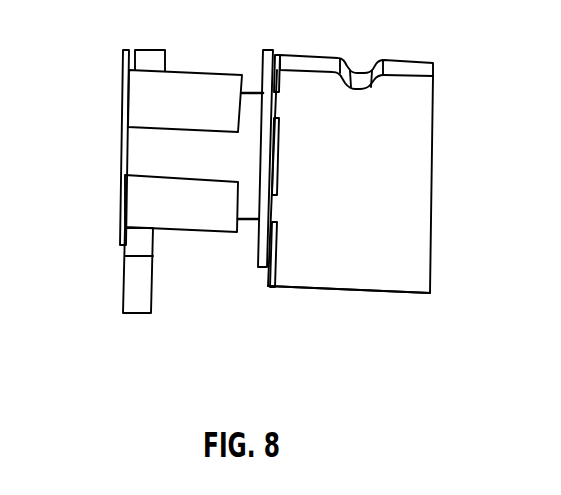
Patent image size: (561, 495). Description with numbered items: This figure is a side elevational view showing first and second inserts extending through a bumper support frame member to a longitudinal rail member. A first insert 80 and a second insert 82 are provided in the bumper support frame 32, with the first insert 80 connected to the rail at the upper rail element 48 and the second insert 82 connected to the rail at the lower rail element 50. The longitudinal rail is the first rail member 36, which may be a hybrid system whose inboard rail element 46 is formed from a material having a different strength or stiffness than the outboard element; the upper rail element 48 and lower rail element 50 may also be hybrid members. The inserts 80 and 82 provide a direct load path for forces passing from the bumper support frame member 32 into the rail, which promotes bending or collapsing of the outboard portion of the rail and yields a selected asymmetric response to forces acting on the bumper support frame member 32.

The bumper support frame member 32 is at (123, 295).
The first rail member 36 is at (377, 310).
The inboard rail element 46 is at (408, 170).
The upper rail element 48 is at (420, 62).
The lower rail element 50 is at (309, 288).
The first insert 80 is at (213, 88).
The second insert 82 is at (147, 200).